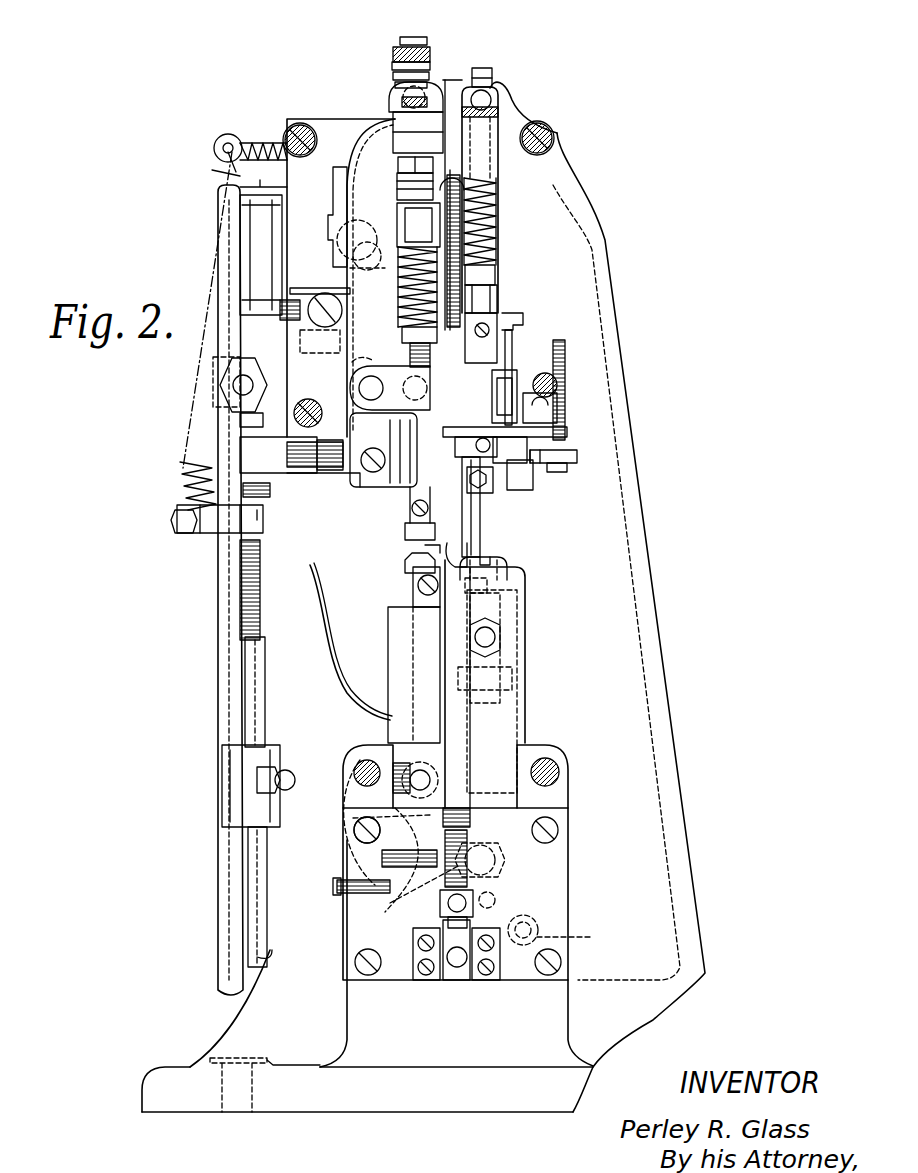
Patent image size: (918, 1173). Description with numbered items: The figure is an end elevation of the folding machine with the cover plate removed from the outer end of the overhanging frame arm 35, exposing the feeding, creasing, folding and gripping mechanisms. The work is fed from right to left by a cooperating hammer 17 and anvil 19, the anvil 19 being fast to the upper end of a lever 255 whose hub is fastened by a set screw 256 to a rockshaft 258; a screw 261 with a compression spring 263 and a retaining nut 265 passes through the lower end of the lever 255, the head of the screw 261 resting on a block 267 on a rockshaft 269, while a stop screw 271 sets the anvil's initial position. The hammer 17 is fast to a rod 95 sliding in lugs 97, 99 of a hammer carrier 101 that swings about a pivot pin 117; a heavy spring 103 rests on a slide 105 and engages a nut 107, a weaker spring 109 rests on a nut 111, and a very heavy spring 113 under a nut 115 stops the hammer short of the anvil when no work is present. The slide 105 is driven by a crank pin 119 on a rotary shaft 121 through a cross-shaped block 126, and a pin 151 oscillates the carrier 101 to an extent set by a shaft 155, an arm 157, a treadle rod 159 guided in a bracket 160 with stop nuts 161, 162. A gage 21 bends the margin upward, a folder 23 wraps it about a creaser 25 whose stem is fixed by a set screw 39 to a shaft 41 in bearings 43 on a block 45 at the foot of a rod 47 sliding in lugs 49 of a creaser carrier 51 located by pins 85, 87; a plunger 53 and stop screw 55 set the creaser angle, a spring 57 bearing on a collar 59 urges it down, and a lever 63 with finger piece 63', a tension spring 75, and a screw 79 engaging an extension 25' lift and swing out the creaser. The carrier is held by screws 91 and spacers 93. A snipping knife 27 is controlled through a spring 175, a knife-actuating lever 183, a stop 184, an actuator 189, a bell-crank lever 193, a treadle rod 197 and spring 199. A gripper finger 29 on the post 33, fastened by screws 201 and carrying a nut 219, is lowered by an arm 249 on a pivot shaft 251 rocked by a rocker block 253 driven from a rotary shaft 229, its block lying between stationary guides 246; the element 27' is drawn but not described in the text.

The hammer 17 is at (410, 533).
The anvil 19 is at (413, 561).
The gage 21 is at (475, 558).
The folder 23 is at (467, 543).
The creaser 25 is at (484, 507).
The upward extension 25' is at (528, 377).
The snipping knife 27 is at (418, 549).
The stop 27' is at (577, 476).
The gripper finger 29 is at (453, 584).
The post 33 is at (517, 608).
The frame arm 35 is at (340, 133).
The set screw 39 is at (527, 467).
The horizontal shaft 41 is at (453, 448).
The bearings 43 is at (520, 429).
The block 45 is at (557, 379).
The vertical rod 47 is at (498, 282).
The lugs 49 is at (492, 128).
The creaser carrier 51 is at (500, 227).
The spring-pressed plunger 53 is at (481, 338).
The stop screw 55 is at (476, 468).
The compression spring 57 is at (500, 203).
The collar 59 is at (498, 263).
The small lever 63 is at (538, 491).
The finger piece 63' is at (568, 455).
The tension spring 75 is at (563, 370).
The screw 79 is at (518, 325).
The pin 85 is at (502, 90).
The pin 87 is at (528, 408).
The screws 91 is at (290, 137).
The spacers 93 is at (305, 124).
The rod 95 is at (413, 36).
The lug 97 is at (400, 452).
The lug 99 is at (430, 140).
The hammer carrier 101 is at (373, 133).
The heavy coiled spring 103 is at (402, 217).
The slide 105 is at (400, 217).
The nut 107 is at (413, 160).
The coiled spring 109 is at (400, 292).
The nut 111 is at (402, 333).
The heavy coiled spring 113 is at (397, 72).
The nut 115 is at (397, 50).
The pivot pin 117 is at (395, 148).
The crank pin 119 is at (355, 222).
The rotary shaft 121 is at (360, 267).
The block 126 is at (343, 245).
The pin 151 is at (357, 388).
The shaft 155 is at (352, 368).
The arm 157 is at (267, 385).
The treadle rod 159 is at (240, 574).
The bracket 160 is at (243, 448).
The stop nut 161 is at (270, 493).
The stop nut 162 is at (243, 425).
The compression spring 175 is at (437, 253).
The knife-actuating lever 183 is at (300, 306).
The stop 184 is at (297, 289).
The actuator 189 is at (303, 340).
The bell-crank lever 193 is at (260, 237).
The treadle rod 197 is at (227, 967).
The tension spring 199 is at (183, 480).
The screws 201 is at (553, 833).
The nut 219 is at (497, 638).
The rotary shaft 229 is at (505, 866).
The stationary guides 246 is at (458, 983).
The arm 249 is at (520, 912).
The pivot shaft 251 is at (578, 939).
The rocker block 253 is at (520, 891).
The lever 255 is at (418, 648).
The set screw 256 is at (367, 749).
The rockshaft 258 is at (410, 790).
The screw 261 is at (350, 853).
The compression spring 263 is at (380, 843).
The nut 265 is at (340, 886).
The block 267 is at (440, 910).
The rockshaft 269 is at (390, 903).
The stop screw 271 is at (337, 895).